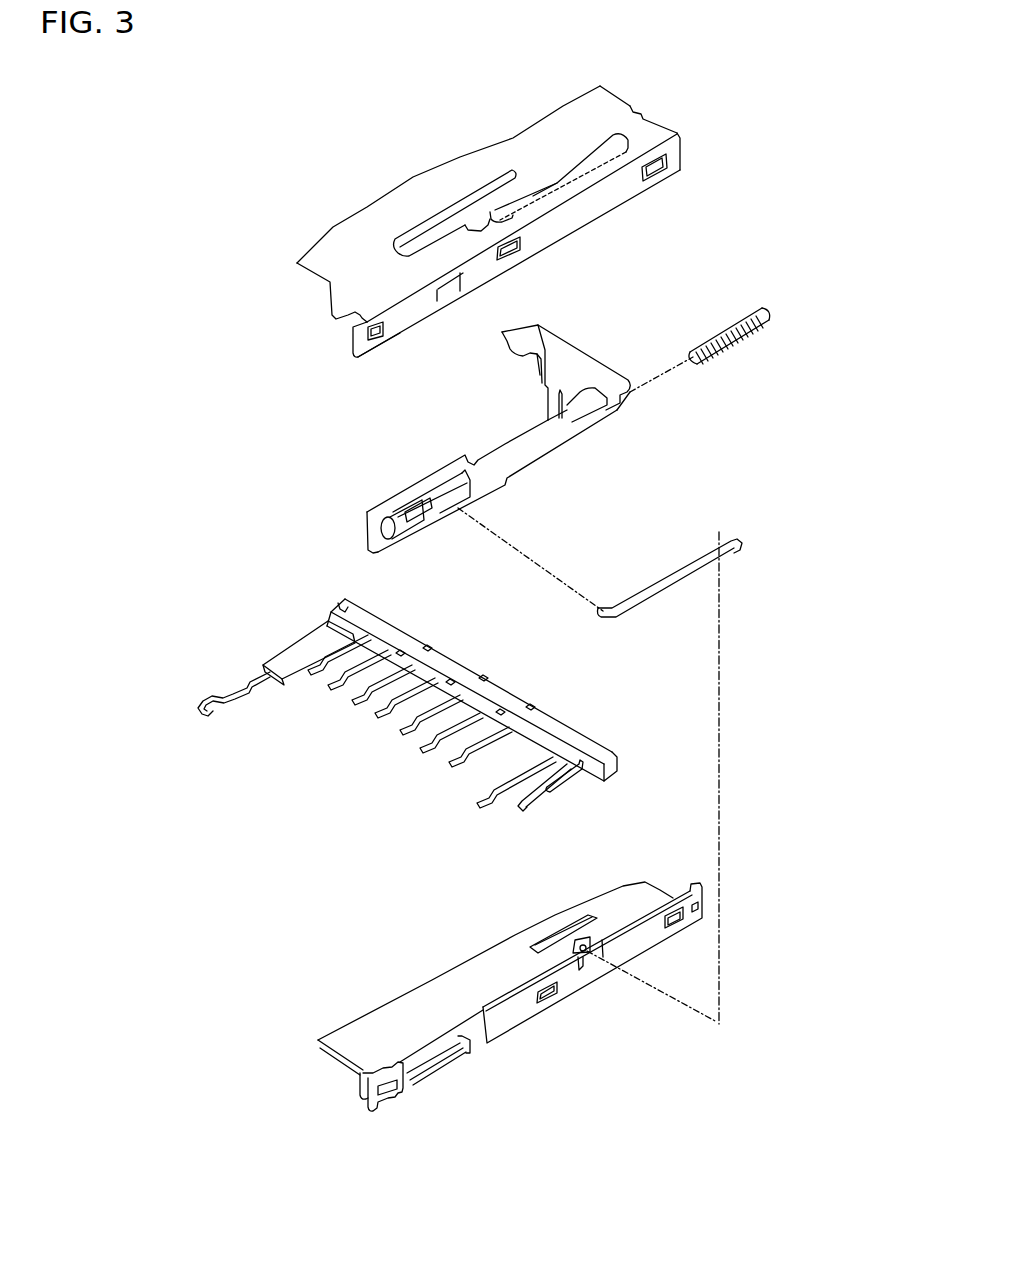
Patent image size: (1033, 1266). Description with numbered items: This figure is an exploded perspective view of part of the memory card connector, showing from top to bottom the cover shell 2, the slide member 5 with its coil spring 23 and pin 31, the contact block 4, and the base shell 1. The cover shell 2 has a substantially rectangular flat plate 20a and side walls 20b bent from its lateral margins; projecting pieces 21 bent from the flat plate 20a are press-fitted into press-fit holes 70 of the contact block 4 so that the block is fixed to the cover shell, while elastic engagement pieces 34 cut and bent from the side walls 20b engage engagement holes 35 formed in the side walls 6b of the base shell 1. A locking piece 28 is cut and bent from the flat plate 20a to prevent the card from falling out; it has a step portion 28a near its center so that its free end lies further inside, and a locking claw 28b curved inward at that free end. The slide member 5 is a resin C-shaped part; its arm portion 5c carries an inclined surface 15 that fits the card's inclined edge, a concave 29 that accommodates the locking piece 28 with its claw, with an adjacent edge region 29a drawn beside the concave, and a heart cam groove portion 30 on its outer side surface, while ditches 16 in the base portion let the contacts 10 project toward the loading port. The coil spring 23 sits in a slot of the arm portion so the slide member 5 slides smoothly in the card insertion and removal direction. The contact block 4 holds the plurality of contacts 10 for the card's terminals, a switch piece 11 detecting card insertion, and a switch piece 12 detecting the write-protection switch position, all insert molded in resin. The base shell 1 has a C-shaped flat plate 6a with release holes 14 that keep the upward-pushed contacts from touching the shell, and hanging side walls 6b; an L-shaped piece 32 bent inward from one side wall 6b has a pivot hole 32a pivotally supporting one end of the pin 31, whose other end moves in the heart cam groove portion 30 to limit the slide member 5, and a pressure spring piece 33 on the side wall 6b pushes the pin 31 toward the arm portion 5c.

The base shell 1 is at (497, 1038).
The cover shell 2 is at (688, 153).
The contact block 4 is at (335, 607).
The slide member 5 is at (560, 353).
The arm portion 5c is at (423, 475).
The flat plate 6a is at (418, 1025).
The side walls 6b is at (523, 1005).
The contacts 10 is at (342, 698).
The switch piece 11 is at (540, 800).
The switch piece 12 is at (217, 690).
The release holes 14 is at (550, 942).
The inclined surface 15 is at (548, 390).
The ditches 16 is at (528, 358).
The flat plate 20a is at (345, 232).
The side walls 20b is at (570, 213).
The projecting pieces 21 is at (645, 115).
The coil spring 23 is at (725, 343).
The locking piece 28 is at (532, 195).
The step portion 28a is at (555, 185).
The locking claw 28b is at (488, 215).
The concave 29 is at (578, 420).
The groove edge 29a is at (608, 408).
The heart cam groove portion 30 is at (423, 518).
The pin 31 is at (735, 550).
The L-shaped piece 32 is at (580, 947).
The pivot hole 32a is at (585, 952).
The pressure spring piece 33 is at (430, 1058).
The elastic engagement pieces 34 is at (663, 172).
The engagement holes 35 is at (682, 923).
The press-fit holes 70 is at (482, 680).